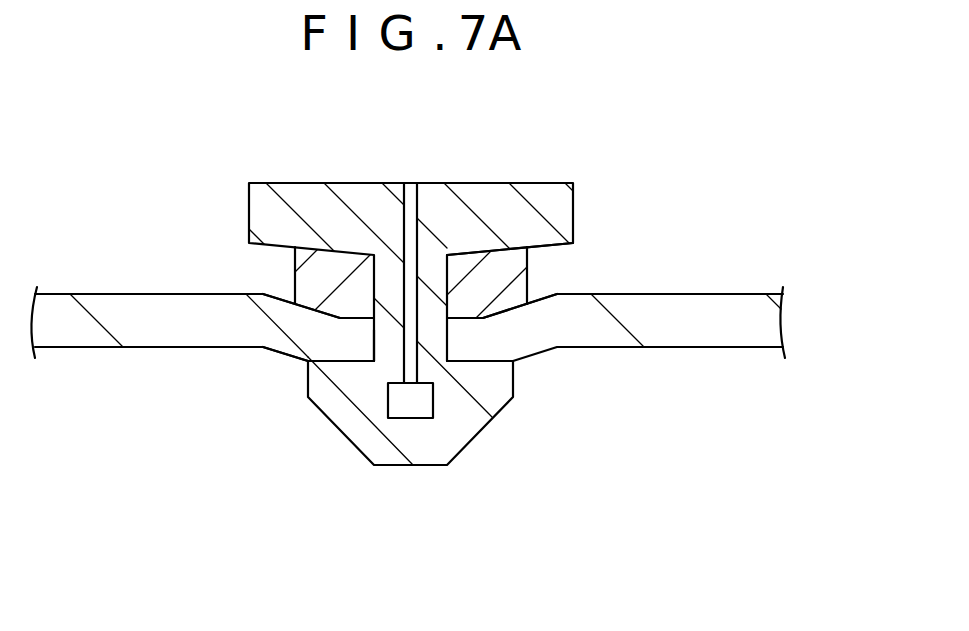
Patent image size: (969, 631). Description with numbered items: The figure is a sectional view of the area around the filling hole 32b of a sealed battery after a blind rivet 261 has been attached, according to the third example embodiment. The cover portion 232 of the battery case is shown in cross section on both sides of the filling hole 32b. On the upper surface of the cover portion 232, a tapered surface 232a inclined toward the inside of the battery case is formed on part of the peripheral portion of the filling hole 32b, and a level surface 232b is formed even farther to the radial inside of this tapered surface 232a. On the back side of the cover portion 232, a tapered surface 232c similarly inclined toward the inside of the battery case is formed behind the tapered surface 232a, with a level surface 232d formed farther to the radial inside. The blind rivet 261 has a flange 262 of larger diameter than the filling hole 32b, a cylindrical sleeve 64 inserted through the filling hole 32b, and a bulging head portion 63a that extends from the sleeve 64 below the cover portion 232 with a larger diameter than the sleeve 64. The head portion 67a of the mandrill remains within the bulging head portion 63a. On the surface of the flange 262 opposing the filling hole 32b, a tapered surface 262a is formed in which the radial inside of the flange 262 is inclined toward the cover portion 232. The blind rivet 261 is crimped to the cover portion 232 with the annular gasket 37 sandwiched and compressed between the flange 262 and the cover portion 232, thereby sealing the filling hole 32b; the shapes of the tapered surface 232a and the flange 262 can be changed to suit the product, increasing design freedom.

The blind rivet 261 is at (237, 137).
The flange 262 is at (512, 217).
The tapered surface 262a is at (556, 247).
The annular gasket 37 is at (503, 282).
The sleeve 64 is at (397, 290).
The head portion 67a is at (403, 400).
The bulging head portion 63a is at (471, 378).
The filling hole 32b is at (380, 364).
The cover portion 232 is at (143, 320).
The tapered surface 232a is at (283, 300).
The level surface 232b is at (476, 316).
The tapered surface 232c is at (290, 354).
The level surface 232d is at (340, 362).